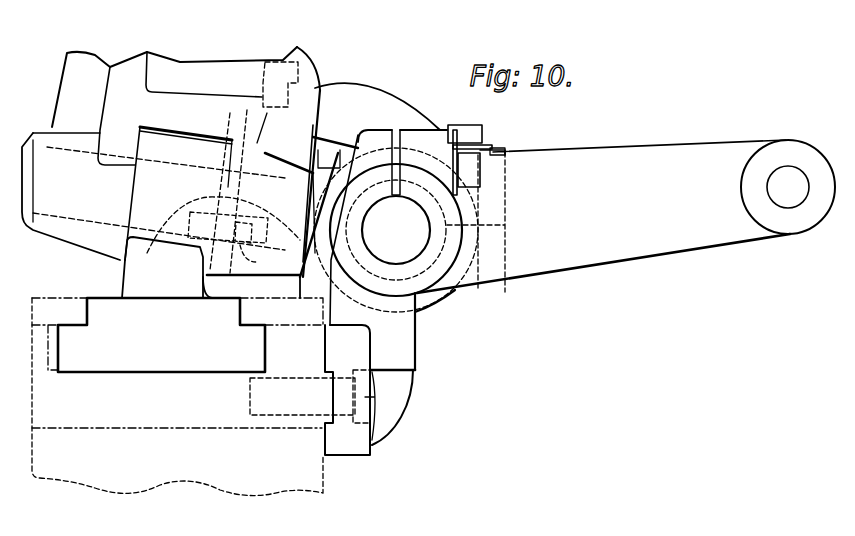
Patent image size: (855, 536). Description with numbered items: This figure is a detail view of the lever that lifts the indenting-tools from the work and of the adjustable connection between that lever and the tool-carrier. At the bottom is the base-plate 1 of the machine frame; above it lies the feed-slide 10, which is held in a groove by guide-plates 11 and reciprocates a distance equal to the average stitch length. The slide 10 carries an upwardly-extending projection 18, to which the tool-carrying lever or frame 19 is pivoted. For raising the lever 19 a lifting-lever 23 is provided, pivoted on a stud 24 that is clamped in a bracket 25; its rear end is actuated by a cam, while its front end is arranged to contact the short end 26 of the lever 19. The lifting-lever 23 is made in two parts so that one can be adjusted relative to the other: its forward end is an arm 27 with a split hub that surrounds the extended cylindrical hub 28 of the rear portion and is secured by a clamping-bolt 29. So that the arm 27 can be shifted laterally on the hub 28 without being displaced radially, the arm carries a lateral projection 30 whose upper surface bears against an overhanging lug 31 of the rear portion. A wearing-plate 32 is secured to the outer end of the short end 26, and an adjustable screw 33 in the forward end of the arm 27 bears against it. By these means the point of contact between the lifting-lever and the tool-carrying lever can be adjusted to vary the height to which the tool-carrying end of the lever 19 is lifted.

The base-plate 1 is at (318, 484).
The slide 10 is at (142, 341).
The guide-plates 11 is at (177, 333).
The upwardly-extending projection 18 is at (168, 193).
The tool-carrying lever or frame 19 is at (165, 106).
The lifting-lever 23 is at (626, 216).
The stud 24 is at (396, 230).
The bracket 25 is at (410, 384).
The short end of the lever 26 is at (242, 265).
The arm 27 is at (322, 80).
The extended cylindrical hub 28 is at (448, 302).
The clamping-bolt 29 is at (465, 125).
The lateral projection 30 is at (327, 147).
The overhanging lug 31 is at (400, 103).
The wearing-plate 32 is at (147, 250).
The adjustable screw 33 is at (298, 52).